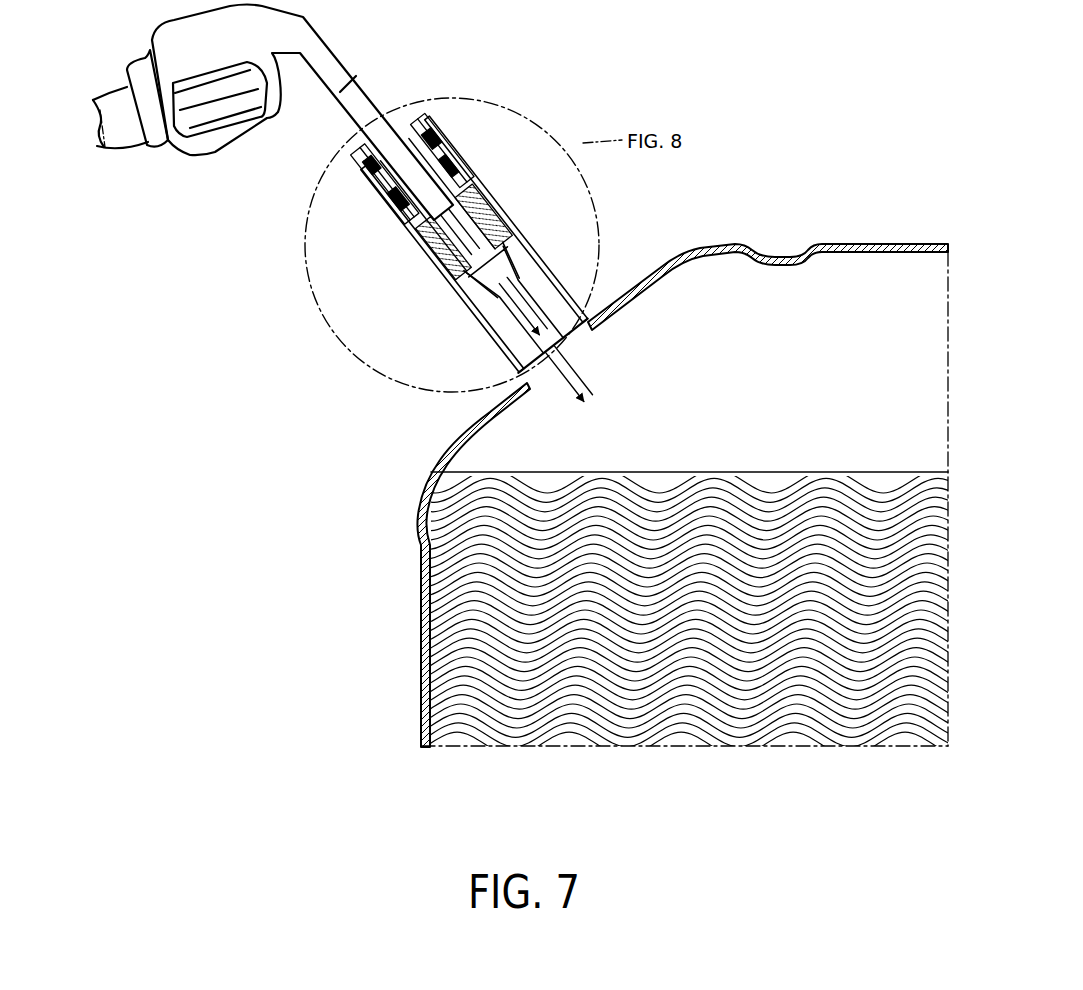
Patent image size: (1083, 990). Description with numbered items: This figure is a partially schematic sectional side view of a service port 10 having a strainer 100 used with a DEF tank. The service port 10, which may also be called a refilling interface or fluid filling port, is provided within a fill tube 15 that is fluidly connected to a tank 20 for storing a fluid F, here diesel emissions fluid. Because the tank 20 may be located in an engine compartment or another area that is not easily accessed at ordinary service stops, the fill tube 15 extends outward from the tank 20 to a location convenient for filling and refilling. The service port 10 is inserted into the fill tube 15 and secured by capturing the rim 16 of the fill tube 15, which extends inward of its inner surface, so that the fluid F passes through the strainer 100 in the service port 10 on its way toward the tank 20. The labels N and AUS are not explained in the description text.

The fuel nozzle N is at (374, 100).
The service port 10 is at (414, 166).
The strainer 100 is at (493, 212).
The rim 16 is at (370, 163).
The fill tube 15 is at (432, 270).
The tank 20 is at (783, 246).
The fluid F is at (588, 366).
The fuel (liquid) in tank AUS is at (753, 470).